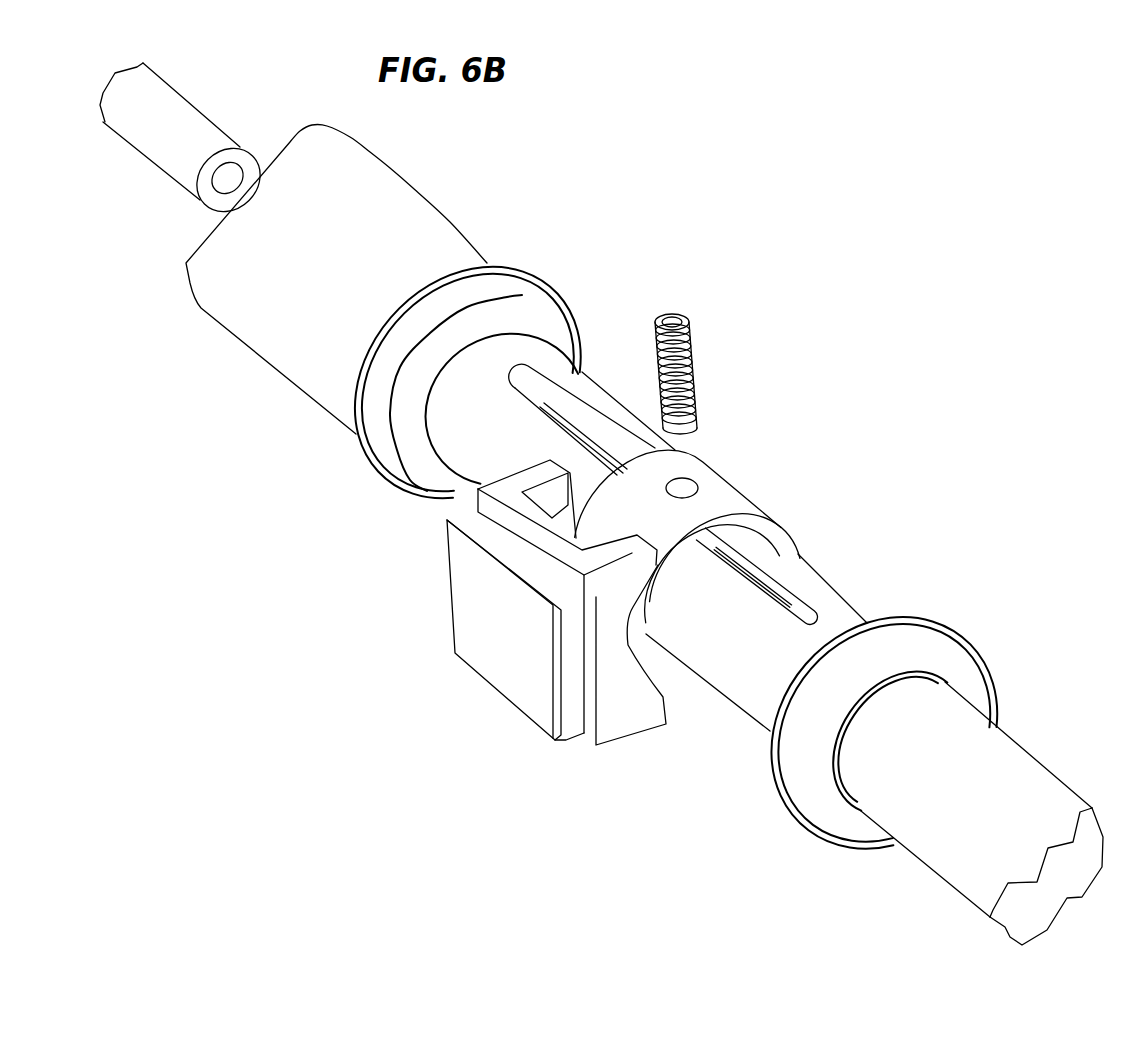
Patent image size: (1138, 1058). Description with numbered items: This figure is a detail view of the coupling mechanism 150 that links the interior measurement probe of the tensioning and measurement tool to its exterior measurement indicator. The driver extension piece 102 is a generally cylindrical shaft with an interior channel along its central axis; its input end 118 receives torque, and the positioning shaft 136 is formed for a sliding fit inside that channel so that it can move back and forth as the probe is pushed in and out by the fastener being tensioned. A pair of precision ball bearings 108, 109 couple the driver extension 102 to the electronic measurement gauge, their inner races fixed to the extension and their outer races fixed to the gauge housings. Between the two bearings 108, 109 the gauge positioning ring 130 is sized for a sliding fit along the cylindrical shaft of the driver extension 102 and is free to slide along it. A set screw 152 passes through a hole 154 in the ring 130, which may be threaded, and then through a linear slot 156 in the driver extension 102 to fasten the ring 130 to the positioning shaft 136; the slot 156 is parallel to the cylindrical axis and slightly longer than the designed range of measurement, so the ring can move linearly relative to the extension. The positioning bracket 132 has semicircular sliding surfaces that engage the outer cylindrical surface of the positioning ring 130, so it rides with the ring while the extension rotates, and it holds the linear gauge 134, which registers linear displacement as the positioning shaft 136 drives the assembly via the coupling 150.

The driver extension piece 102 is at (1012, 752).
The precision ball bearing 108 is at (550, 280).
The precision ball bearing 109 is at (897, 615).
The input end 118 is at (413, 190).
The gauge positioning ring 130 is at (743, 483).
The positioning bracket 132 is at (630, 743).
The linear gauge 134 is at (521, 712).
The positioning shaft 136 is at (190, 115).
The coupling mechanism 150 is at (833, 318).
The set screw 152 is at (685, 315).
The hole 154 is at (688, 480).
The linear slot 156 is at (810, 590).